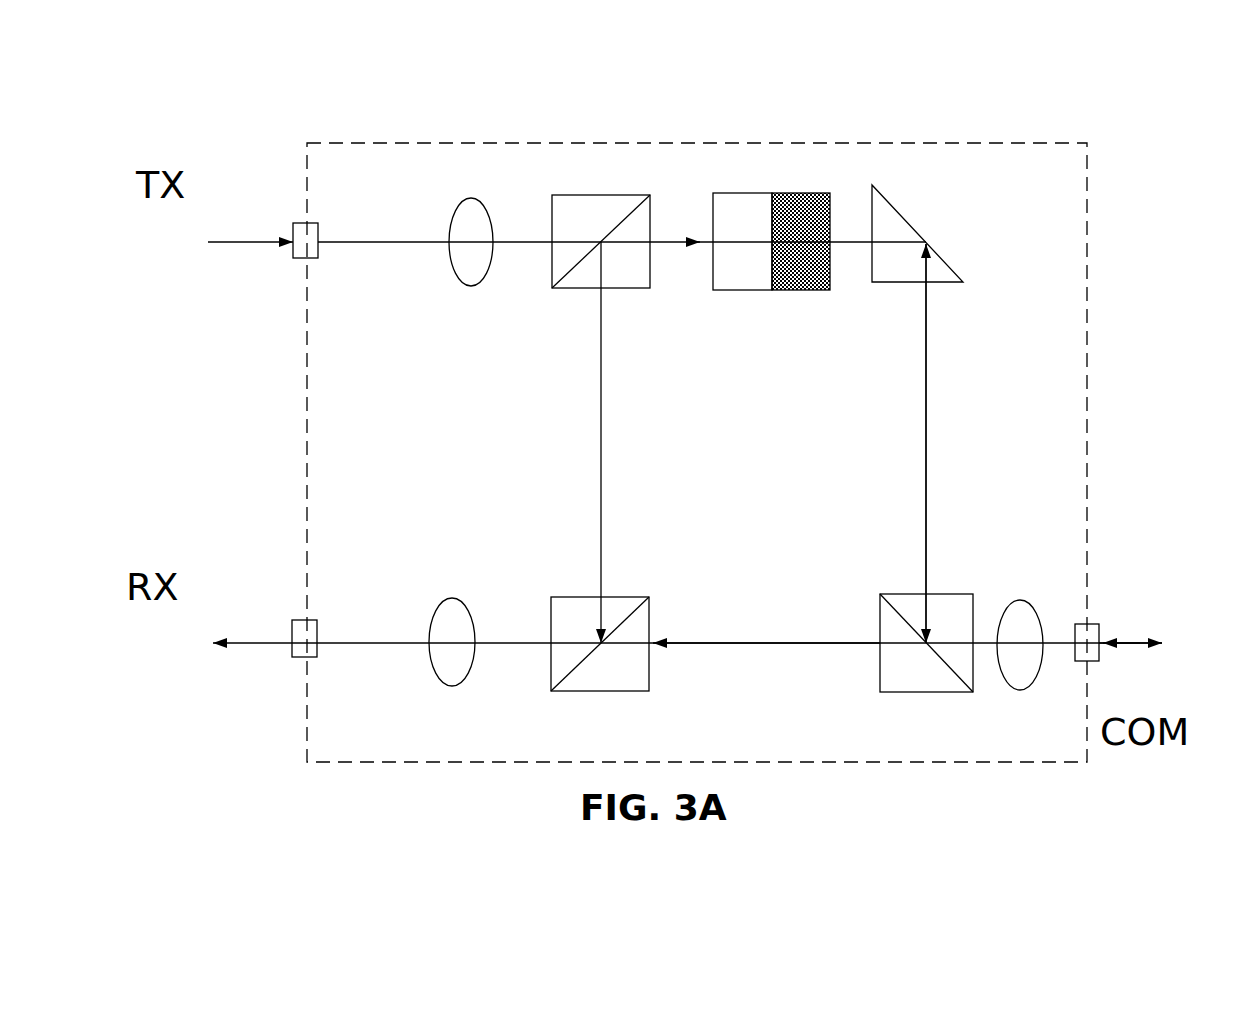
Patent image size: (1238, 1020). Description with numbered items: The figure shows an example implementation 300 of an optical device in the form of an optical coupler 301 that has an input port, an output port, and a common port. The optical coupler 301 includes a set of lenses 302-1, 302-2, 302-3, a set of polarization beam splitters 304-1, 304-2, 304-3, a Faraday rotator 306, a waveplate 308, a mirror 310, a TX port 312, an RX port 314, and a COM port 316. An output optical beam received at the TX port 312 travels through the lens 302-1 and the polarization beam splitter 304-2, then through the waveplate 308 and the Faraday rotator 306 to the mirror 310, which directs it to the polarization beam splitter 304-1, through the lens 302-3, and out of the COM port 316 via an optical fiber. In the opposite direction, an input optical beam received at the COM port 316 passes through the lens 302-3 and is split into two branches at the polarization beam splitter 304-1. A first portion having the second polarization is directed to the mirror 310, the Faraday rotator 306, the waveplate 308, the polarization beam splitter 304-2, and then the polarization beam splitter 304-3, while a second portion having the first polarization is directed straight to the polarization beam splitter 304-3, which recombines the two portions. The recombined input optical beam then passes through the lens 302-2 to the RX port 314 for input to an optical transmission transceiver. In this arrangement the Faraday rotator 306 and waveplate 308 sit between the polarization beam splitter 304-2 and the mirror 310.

The example implementation 300 is at (218, 53).
The optical coupler 301 is at (1090, 172).
The lens 302-1 is at (471, 198).
The lens 302-2 is at (452, 598).
The lens 302-3 is at (1037, 617).
The polarization beam splitter 304-1 is at (957, 593).
The polarization beam splitter 304-2 is at (597, 195).
The polarization beam splitter 304-3 is at (637, 597).
The Faraday rotator 306 is at (803, 193).
The waveplate 308 is at (740, 193).
The mirror 310 is at (933, 250).
The TX port 312 is at (292, 250).
The RX port 314 is at (291, 650).
The COM port 316 is at (1104, 660).